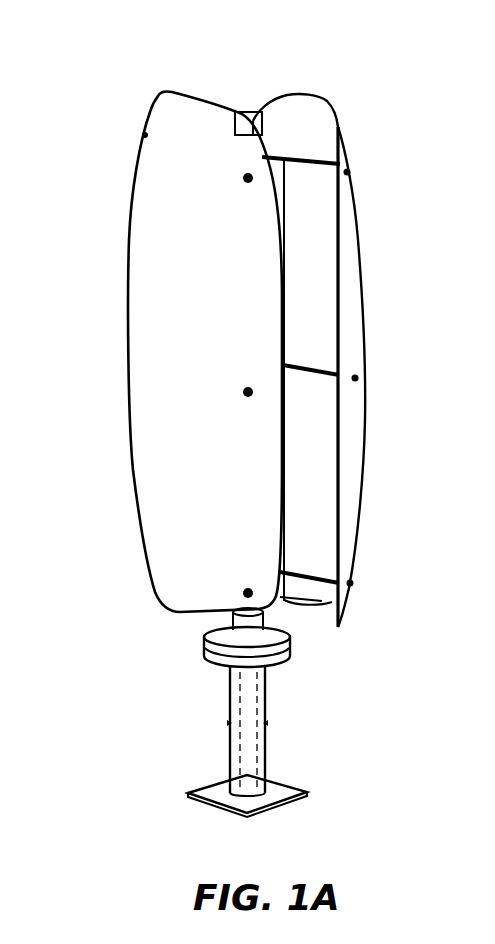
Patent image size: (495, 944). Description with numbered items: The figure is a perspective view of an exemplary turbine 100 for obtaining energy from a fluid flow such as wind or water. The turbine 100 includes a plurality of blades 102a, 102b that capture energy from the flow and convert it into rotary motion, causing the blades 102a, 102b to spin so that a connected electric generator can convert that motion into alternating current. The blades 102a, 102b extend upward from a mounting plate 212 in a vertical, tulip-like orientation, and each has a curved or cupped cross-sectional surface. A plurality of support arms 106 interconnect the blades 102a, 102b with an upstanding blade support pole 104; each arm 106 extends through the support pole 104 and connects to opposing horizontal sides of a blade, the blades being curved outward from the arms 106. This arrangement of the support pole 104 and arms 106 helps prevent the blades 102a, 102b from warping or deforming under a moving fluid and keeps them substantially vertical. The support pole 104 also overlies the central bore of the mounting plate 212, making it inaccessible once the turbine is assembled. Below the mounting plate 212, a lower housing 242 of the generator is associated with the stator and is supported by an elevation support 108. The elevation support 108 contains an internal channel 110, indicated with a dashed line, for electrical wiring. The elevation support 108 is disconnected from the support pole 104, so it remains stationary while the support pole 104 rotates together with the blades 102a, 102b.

The turbine 100 is at (118, 51).
The blade 102a is at (223, 313).
The blade 102b is at (334, 305).
The blade support pole 104 is at (295, 79).
The support arms 106 is at (321, 184).
The elevation support 108 is at (171, 731).
The channel 110 is at (251, 750).
The mounting plate 212 is at (173, 632).
The lower housing 242 is at (314, 705).